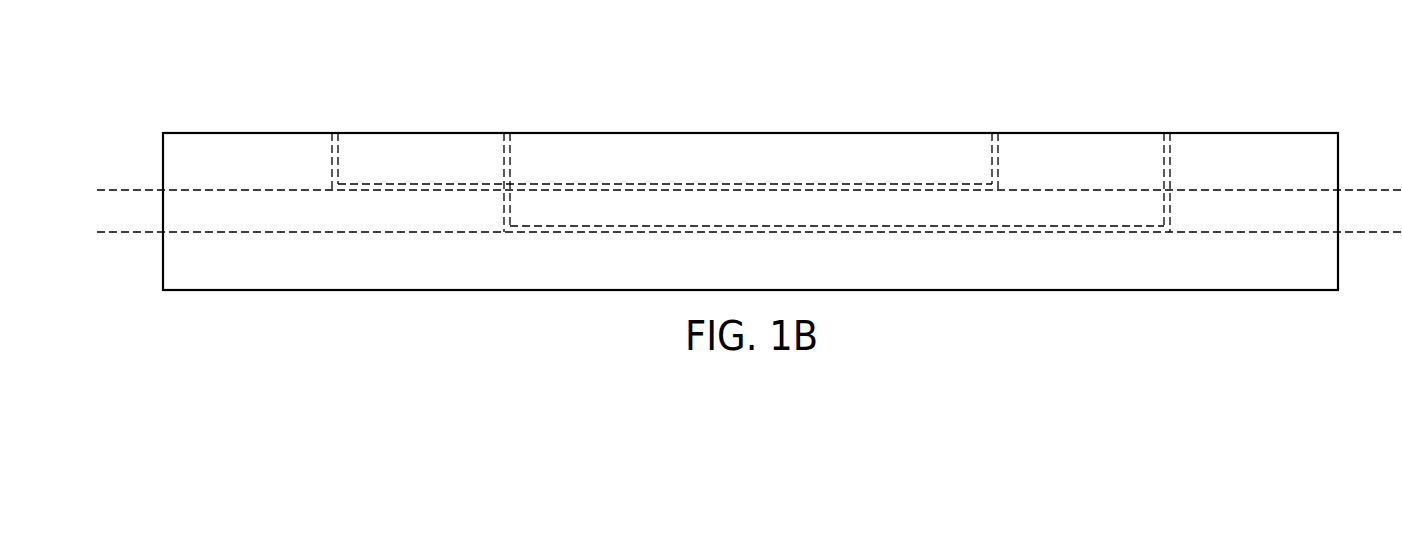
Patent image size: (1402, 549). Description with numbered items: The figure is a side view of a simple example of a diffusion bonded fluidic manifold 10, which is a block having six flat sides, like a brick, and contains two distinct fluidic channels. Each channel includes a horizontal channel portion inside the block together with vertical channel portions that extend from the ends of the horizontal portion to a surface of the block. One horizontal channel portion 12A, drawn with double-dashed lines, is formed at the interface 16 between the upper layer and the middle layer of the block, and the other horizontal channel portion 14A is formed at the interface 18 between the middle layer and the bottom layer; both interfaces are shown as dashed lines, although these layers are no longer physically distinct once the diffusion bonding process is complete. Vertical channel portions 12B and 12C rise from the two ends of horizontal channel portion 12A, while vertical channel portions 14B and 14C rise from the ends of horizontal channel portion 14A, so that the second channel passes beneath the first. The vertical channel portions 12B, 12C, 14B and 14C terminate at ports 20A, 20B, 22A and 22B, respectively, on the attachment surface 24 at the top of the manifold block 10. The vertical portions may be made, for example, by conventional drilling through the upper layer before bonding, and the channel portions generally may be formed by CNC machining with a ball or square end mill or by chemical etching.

The diffusion bonded fluidic manifold 10 is at (142, 124).
The horizontal channel portion 12A is at (379, 184).
The vertical channel portion 12B is at (332, 183).
The vertical channel portion 12C is at (999, 173).
The horizontal channel portion 14A is at (617, 233).
The vertical channel portion 14B is at (512, 173).
The vertical channel portion 14C is at (1172, 173).
The interface 16 is at (120, 190).
The interface 18 is at (120, 232).
The port 20A is at (336, 124).
The port 20B is at (996, 124).
The port 22A is at (508, 124).
The port 22B is at (1168, 124).
The attachment surface 24 is at (752, 124).